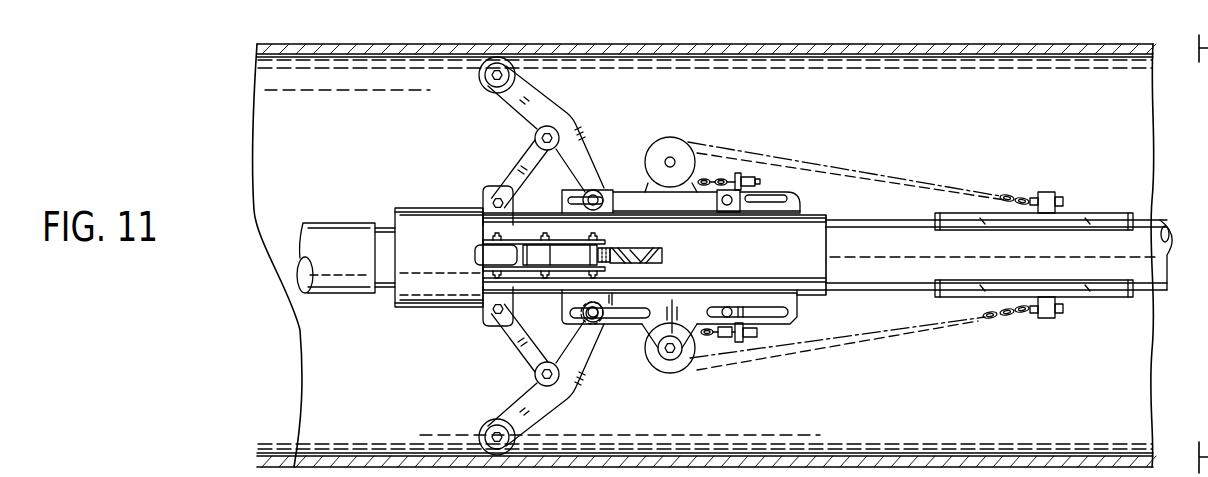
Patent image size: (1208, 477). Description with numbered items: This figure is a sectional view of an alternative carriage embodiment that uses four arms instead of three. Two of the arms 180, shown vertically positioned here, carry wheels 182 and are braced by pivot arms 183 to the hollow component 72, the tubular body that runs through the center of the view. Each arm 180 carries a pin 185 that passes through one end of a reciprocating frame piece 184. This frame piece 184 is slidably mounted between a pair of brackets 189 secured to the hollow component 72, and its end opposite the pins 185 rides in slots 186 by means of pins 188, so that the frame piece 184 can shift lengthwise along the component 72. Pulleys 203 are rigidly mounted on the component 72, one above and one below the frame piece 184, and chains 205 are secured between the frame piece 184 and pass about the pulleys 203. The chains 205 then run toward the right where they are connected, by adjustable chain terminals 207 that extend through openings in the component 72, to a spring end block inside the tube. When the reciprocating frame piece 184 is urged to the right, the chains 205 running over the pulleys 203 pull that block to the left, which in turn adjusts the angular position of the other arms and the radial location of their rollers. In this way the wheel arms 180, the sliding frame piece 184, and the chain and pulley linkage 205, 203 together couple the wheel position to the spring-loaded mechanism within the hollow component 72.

The hollow component 72 is at (436, 207).
The arms 180 is at (553, 113).
The wheels 182 is at (481, 80).
The pivot arms 183 is at (513, 156).
The reciprocating frame piece 184 is at (688, 198).
The pins 185 is at (598, 194).
The slots 186 is at (760, 203).
The pins 188 is at (727, 195).
The brackets 189 is at (792, 209).
The pulleys 203 is at (667, 141).
The chains 205 is at (1005, 195).
The adjustable chain terminals 207 is at (1050, 192).